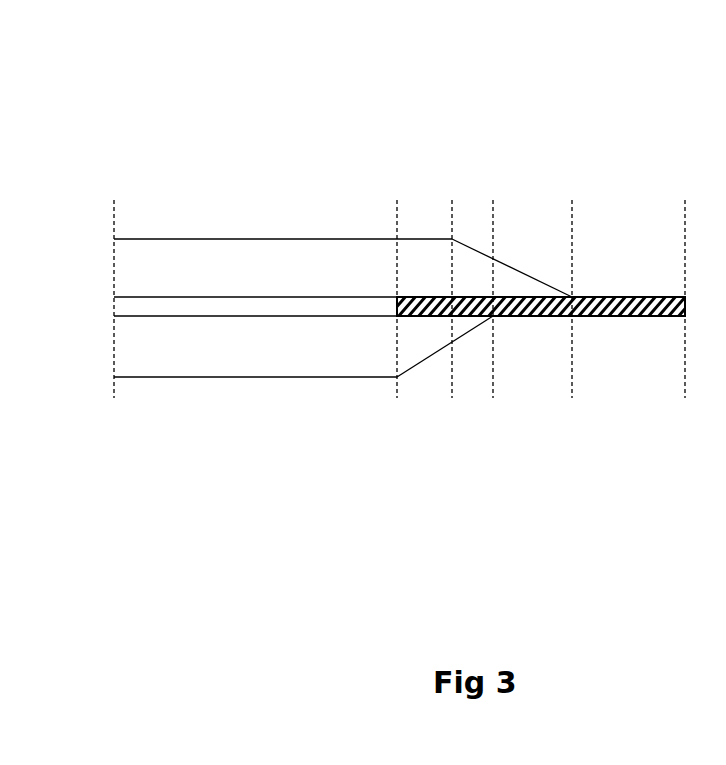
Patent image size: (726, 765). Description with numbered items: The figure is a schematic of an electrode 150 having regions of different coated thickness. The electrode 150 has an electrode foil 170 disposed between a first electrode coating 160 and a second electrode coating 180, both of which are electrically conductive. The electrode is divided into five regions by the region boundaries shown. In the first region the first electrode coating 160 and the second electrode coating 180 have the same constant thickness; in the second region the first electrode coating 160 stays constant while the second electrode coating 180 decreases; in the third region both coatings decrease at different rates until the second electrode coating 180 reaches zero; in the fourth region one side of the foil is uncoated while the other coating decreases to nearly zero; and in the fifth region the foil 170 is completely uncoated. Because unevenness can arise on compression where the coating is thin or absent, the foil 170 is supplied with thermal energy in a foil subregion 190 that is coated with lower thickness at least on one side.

The electrode 150 is at (203, 137).
The first electrode coating 160 is at (173, 257).
The electrode foil 170 is at (166, 303).
The second electrode coating 180 is at (263, 363).
The foil subregion 190 is at (600, 317).